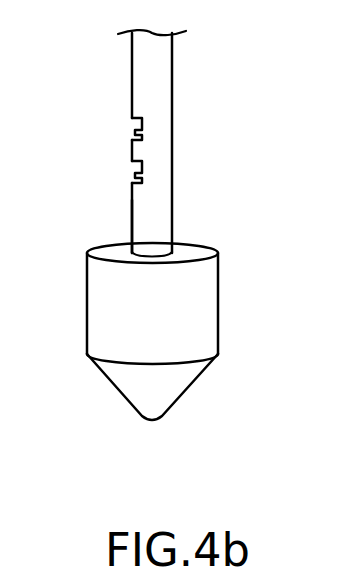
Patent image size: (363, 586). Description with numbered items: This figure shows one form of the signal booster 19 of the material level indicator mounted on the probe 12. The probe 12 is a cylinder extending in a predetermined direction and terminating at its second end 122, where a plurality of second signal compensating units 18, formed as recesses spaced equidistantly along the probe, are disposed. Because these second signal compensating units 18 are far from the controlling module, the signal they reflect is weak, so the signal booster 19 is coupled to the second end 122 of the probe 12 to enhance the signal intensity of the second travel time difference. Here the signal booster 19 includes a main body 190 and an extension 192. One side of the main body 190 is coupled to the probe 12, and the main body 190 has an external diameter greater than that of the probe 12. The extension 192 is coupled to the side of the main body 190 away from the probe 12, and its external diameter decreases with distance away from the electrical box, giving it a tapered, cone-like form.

The probe 12 is at (174, 88).
The second signal compensating unit 18 is at (134, 124).
The second end 122 is at (167, 162).
The signal booster 19 is at (216, 336).
The main body 190 is at (193, 310).
The extension 192 is at (178, 382).